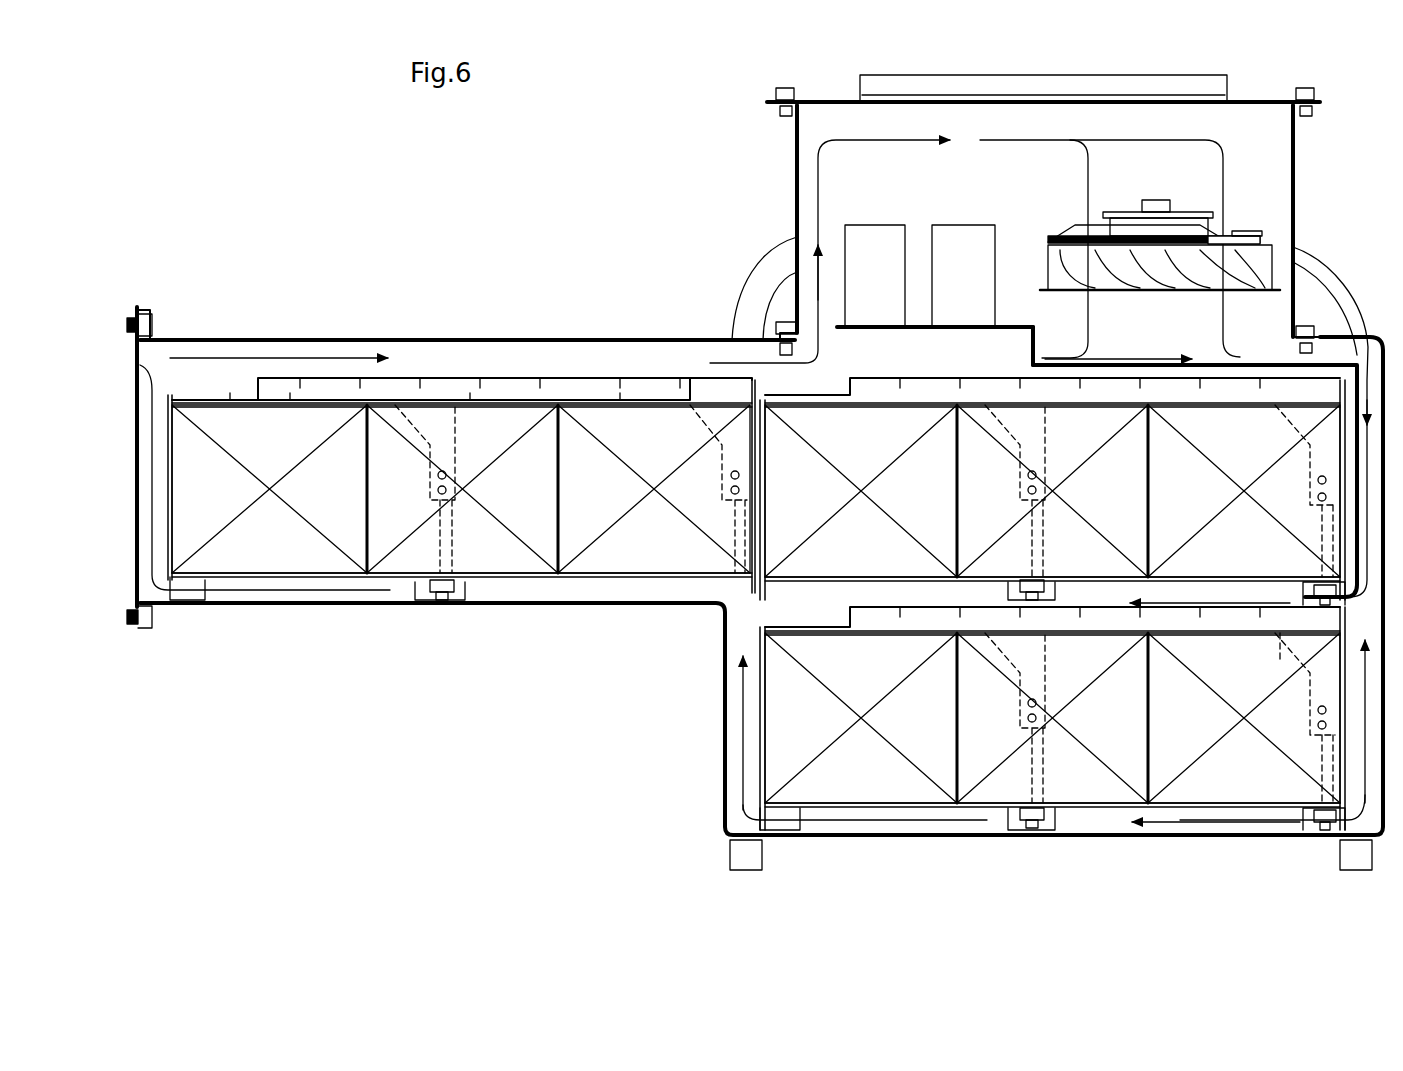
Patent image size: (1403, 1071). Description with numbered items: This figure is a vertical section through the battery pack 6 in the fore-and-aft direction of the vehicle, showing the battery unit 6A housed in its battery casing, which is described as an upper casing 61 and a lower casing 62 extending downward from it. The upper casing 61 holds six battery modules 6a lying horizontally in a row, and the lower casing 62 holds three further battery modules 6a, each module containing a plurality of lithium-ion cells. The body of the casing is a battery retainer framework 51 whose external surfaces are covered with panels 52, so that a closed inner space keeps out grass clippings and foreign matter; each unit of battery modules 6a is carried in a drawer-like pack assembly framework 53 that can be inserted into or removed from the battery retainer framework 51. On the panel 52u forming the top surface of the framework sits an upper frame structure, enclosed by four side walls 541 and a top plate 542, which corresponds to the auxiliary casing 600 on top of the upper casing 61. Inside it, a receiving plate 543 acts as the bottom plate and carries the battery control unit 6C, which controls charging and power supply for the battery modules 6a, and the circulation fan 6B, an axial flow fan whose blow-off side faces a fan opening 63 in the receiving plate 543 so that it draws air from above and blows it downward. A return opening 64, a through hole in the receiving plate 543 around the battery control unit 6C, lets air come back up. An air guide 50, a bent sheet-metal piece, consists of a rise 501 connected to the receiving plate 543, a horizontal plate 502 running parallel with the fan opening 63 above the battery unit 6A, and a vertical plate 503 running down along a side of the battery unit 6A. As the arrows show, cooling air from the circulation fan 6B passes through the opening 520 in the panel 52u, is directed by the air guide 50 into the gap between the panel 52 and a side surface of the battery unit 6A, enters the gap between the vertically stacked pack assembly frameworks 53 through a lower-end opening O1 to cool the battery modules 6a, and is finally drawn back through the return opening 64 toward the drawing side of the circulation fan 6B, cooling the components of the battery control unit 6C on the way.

The battery pack 6 is at (283, 165).
The battery module 6a is at (1313, 415).
The battery unit 6A is at (500, 585).
The circulation fan 6B is at (1250, 265).
The battery control unit 6C is at (980, 210).
The air guide 50 is at (1350, 468).
The rise 501 is at (1033, 350).
The horizontal plate 502 is at (1182, 366).
The vertical plate 503 is at (1352, 525).
The battery retainer framework 51 is at (755, 283).
The panel 52 is at (137, 368).
The panel 52u is at (600, 338).
The pack assembly framework 53 is at (1020, 580).
The opening 520 is at (1275, 352).
The side wall 541 is at (1295, 183).
The top plate 542 is at (1280, 100).
The receiving plate 543 is at (922, 327).
The auxiliary casing 600 is at (797, 160).
The upper casing 61 is at (480, 338).
The lower casing 62 is at (722, 745).
The fan opening 63 is at (1130, 318).
The return opening 64 is at (826, 302).
The lower-end opening O1 is at (1292, 648).